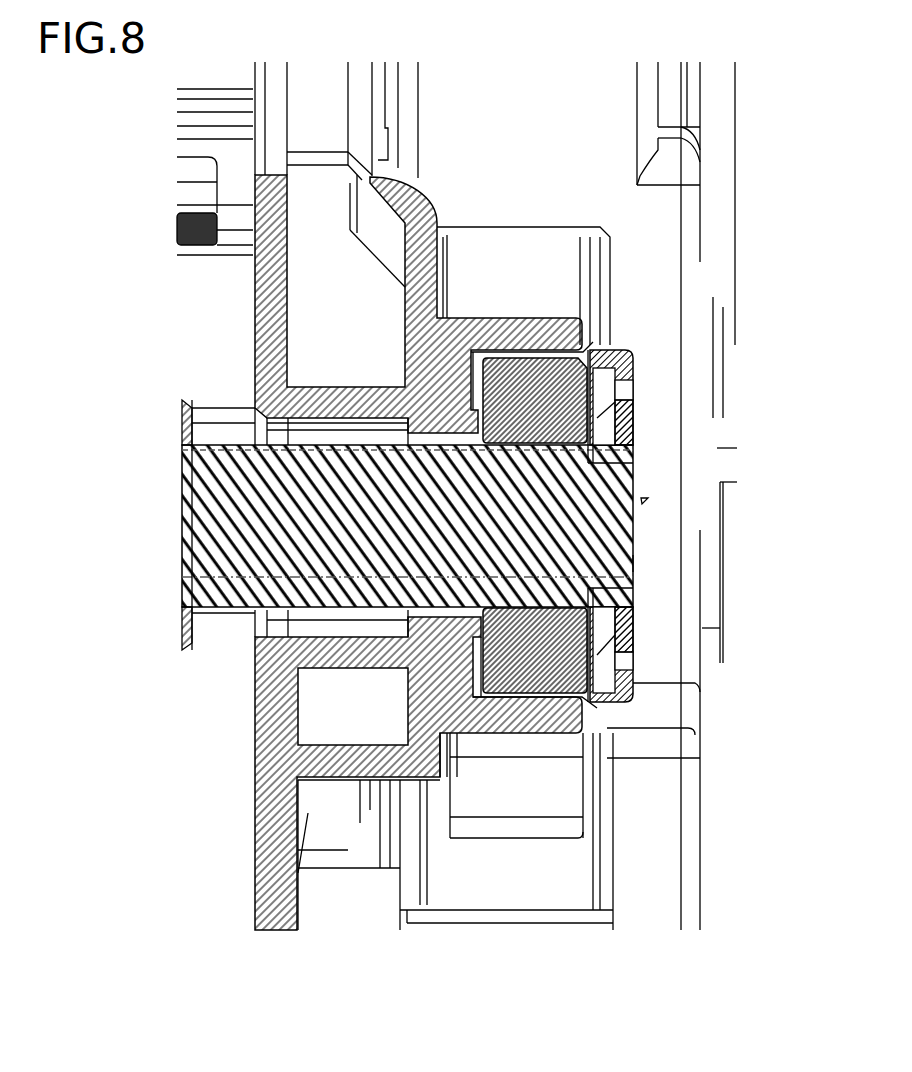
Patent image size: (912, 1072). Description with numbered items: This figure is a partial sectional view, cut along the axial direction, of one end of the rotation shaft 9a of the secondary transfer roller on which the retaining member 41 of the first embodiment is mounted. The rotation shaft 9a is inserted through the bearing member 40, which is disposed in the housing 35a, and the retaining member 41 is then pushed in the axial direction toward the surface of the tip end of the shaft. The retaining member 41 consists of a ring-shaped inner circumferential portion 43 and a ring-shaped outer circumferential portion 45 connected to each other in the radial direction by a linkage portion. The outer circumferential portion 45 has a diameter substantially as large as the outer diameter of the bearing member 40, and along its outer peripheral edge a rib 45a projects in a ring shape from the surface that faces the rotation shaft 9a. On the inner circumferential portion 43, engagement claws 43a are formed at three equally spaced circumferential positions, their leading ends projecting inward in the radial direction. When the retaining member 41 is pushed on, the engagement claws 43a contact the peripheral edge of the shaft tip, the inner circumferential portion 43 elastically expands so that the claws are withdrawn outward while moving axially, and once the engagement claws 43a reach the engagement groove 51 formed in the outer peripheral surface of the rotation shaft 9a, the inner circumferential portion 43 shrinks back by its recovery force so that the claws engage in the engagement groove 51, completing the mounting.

The rotation shaft 9a is at (217, 612).
The bearing member 40 is at (530, 373).
The retaining member 41 is at (690, 482).
The outer circumferential portion 45 is at (640, 358).
The inner circumferential portion 43 is at (633, 628).
The engagement claws 43a is at (640, 415).
The engagement groove 51 is at (633, 563).
The housing 35a is at (500, 717).
The rib 45a is at (607, 707).